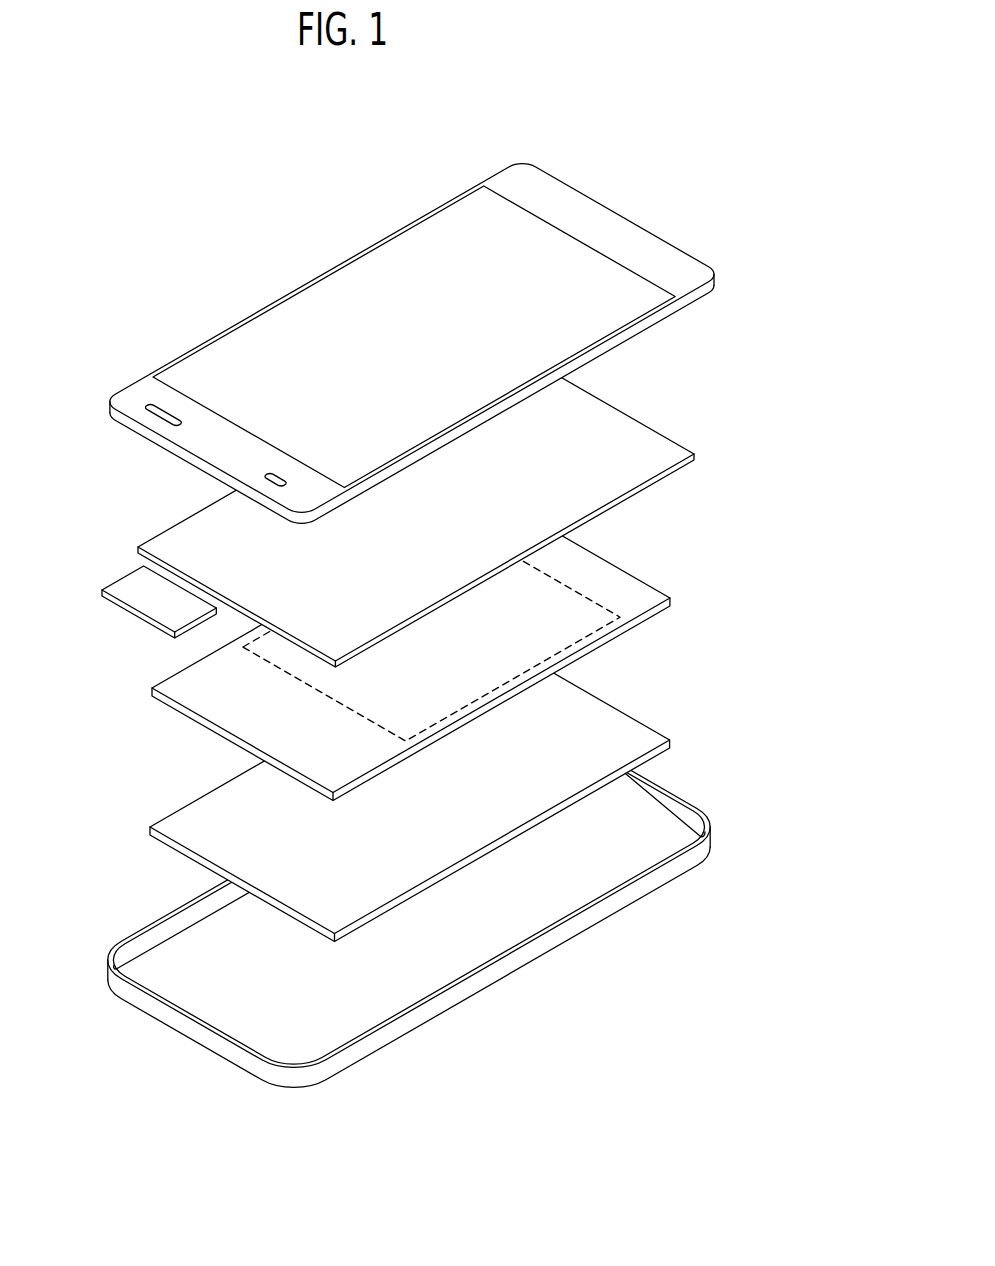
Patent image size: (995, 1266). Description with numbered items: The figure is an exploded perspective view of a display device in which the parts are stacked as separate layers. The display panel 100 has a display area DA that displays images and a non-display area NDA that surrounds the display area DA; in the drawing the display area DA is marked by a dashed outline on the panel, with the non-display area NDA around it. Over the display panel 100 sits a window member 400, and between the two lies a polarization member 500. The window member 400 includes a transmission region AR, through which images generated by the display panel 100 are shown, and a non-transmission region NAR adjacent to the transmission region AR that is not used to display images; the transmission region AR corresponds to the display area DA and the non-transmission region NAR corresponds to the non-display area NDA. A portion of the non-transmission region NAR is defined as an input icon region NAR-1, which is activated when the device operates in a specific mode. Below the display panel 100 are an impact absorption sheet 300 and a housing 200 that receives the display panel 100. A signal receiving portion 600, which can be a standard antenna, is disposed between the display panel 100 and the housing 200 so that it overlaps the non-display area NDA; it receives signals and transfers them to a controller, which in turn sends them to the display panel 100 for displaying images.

The display panel 100 is at (389, 647).
The housing 200 is at (563, 935).
The impact absorption sheet 300 is at (613, 728).
The window member 400 is at (412, 325).
The polarization member 500 is at (627, 427).
The signal receiving portion 600 is at (145, 585).
The transmission region AR is at (410, 248).
The non-transmission region NAR is at (557, 199).
The input icon region NAR-1 is at (168, 408).
The display area DA is at (567, 635).
The non-display area NDA is at (207, 677).